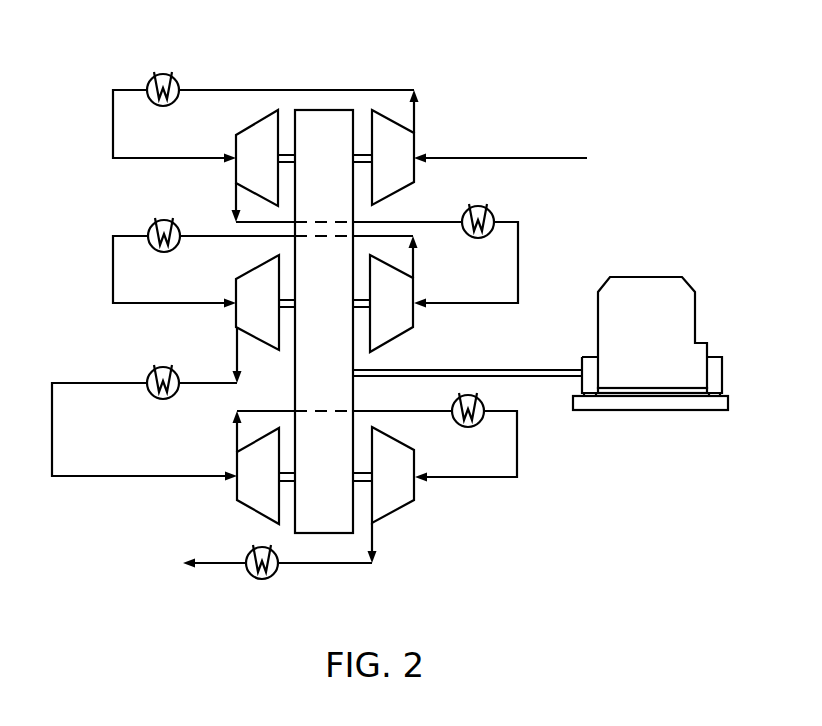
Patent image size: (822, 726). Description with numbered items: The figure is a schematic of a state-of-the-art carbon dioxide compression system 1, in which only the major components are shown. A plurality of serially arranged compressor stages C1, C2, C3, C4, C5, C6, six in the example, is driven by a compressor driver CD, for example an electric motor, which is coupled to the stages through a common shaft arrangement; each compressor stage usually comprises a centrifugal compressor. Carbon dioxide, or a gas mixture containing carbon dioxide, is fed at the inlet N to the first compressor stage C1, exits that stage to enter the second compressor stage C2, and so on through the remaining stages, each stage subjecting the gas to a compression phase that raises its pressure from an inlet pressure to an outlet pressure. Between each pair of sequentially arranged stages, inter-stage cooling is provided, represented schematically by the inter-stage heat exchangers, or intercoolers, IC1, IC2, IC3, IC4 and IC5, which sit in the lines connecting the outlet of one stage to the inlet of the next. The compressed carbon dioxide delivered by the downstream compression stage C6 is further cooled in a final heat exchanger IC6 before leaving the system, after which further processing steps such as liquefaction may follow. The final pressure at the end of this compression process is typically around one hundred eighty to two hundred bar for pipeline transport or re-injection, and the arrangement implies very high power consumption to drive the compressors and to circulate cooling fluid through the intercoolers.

The compressor system 1 is at (455, 492).
The first compressor stage C1 is at (406, 147).
The second compressor stage C2 is at (248, 133).
The compressor stage C3 is at (406, 297).
The compressor stage C4 is at (250, 280).
The compressor stage C5 is at (250, 499).
The downstream compression stage C6 is at (406, 464).
The inter-stage heat exchanger IC1 is at (178, 77).
The inter-stage heat exchanger IC2 is at (491, 209).
The inter-stage heat exchanger IC3 is at (152, 223).
The inter-stage heat exchanger IC4 is at (148, 373).
The inter-stage heat exchanger IC5 is at (470, 428).
The final heat exchanger IC6 is at (261, 580).
The nitrogen gas feed N is at (488, 156).
The compressor driver CD is at (650, 285).